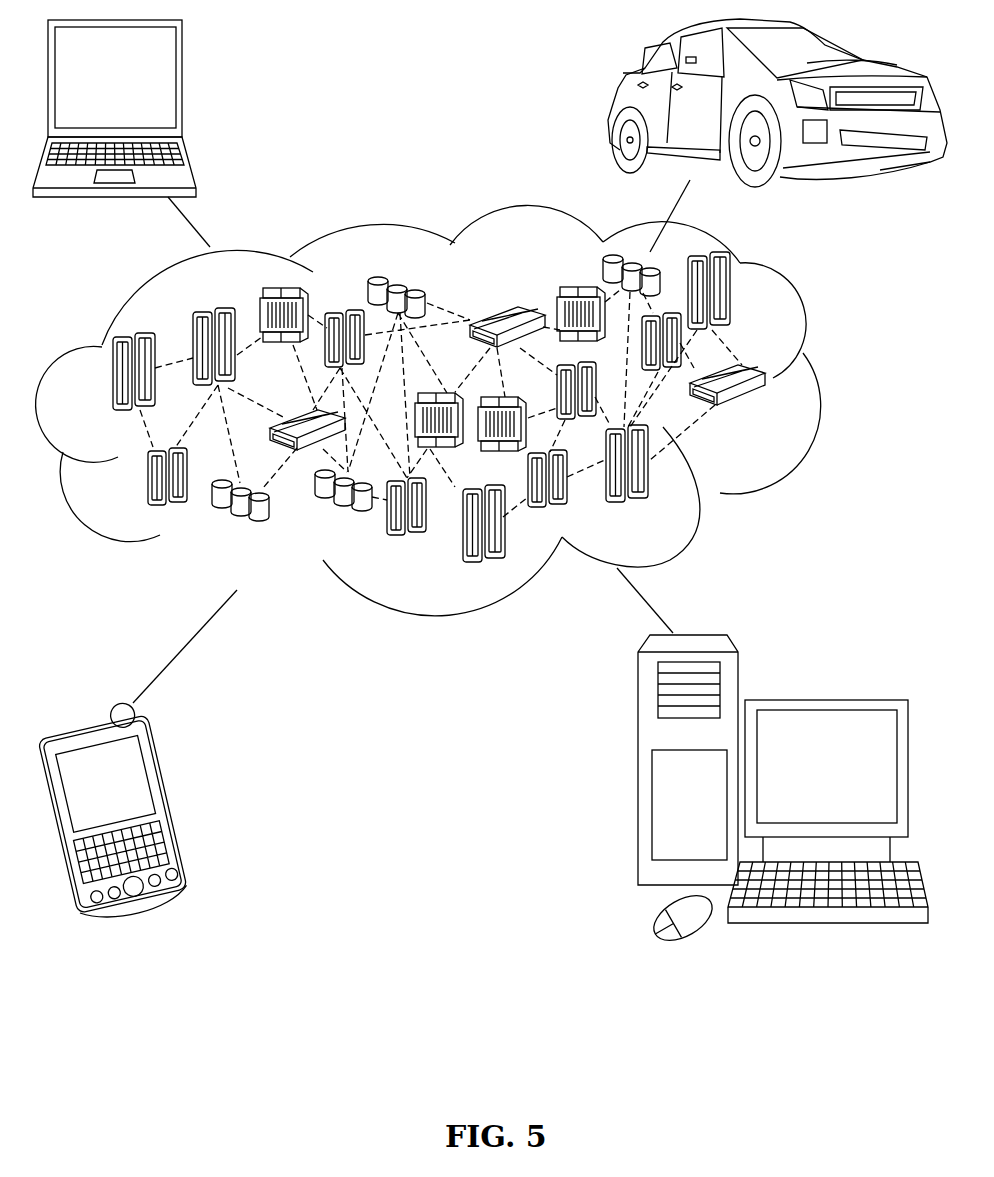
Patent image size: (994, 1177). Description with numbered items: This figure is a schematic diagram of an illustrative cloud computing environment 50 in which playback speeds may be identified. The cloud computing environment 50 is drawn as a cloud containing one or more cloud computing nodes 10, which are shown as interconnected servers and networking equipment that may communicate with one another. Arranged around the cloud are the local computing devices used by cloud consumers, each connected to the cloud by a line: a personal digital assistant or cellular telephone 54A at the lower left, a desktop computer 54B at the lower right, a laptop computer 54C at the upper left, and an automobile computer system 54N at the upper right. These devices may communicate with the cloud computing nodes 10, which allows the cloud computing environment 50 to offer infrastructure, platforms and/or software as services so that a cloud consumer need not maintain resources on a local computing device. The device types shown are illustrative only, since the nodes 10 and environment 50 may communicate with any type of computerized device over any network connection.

The cloud computing node 10 is at (767, 420).
The cloud computing environment 50 is at (823, 387).
The personal digital assistant or cellular telephone 54A is at (170, 798).
The desktop computer 54B is at (823, 698).
The laptop computer 54C is at (187, 88).
The automobile computer system 54N is at (612, 102).